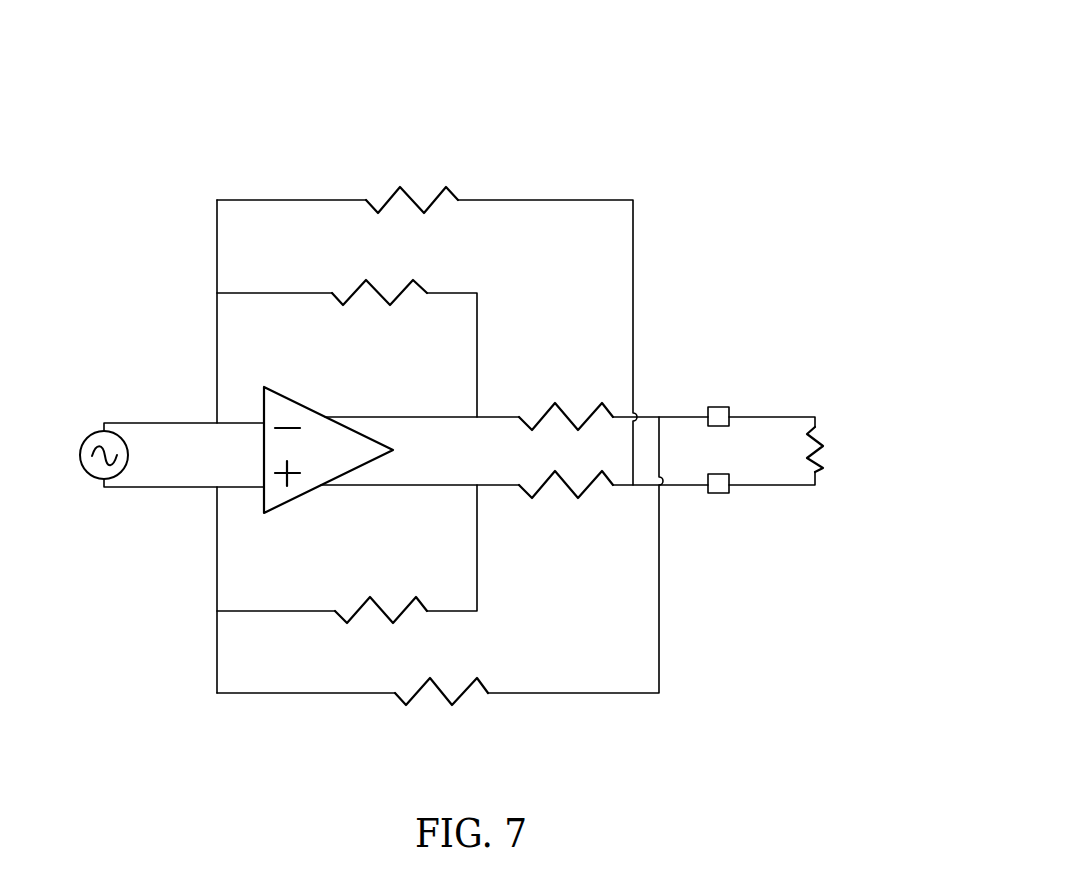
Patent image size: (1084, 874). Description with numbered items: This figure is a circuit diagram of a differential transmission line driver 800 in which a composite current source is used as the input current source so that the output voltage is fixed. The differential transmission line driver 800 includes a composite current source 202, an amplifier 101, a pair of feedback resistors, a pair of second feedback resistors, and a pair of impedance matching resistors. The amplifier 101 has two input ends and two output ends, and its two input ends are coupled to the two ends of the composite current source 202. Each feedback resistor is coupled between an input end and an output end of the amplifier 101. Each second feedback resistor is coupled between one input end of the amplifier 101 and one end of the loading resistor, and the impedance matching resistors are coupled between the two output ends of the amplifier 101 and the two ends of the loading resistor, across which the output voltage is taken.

The differential transmission line driver 800 is at (717, 101).
The composite current source 202 is at (87, 434).
The amplifier 101 is at (318, 408).